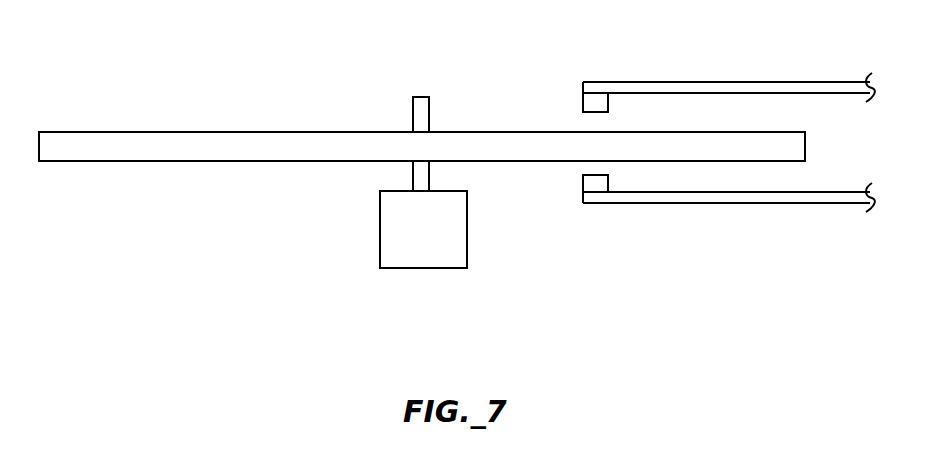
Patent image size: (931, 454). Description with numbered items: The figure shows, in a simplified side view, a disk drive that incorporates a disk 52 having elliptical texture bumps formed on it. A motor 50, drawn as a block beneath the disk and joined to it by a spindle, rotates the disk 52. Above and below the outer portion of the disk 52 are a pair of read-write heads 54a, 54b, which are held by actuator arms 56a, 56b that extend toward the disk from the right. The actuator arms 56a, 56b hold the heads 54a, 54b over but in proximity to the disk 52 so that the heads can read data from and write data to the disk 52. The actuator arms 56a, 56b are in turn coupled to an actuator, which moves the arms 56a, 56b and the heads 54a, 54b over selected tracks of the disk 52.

The motor 50 is at (395, 215).
The disk 52 is at (105, 131).
The read-write head 54a is at (583, 99).
The read-write head 54b is at (583, 182).
The actuator arm 56a is at (672, 82).
The actuator arm 56b is at (683, 203).